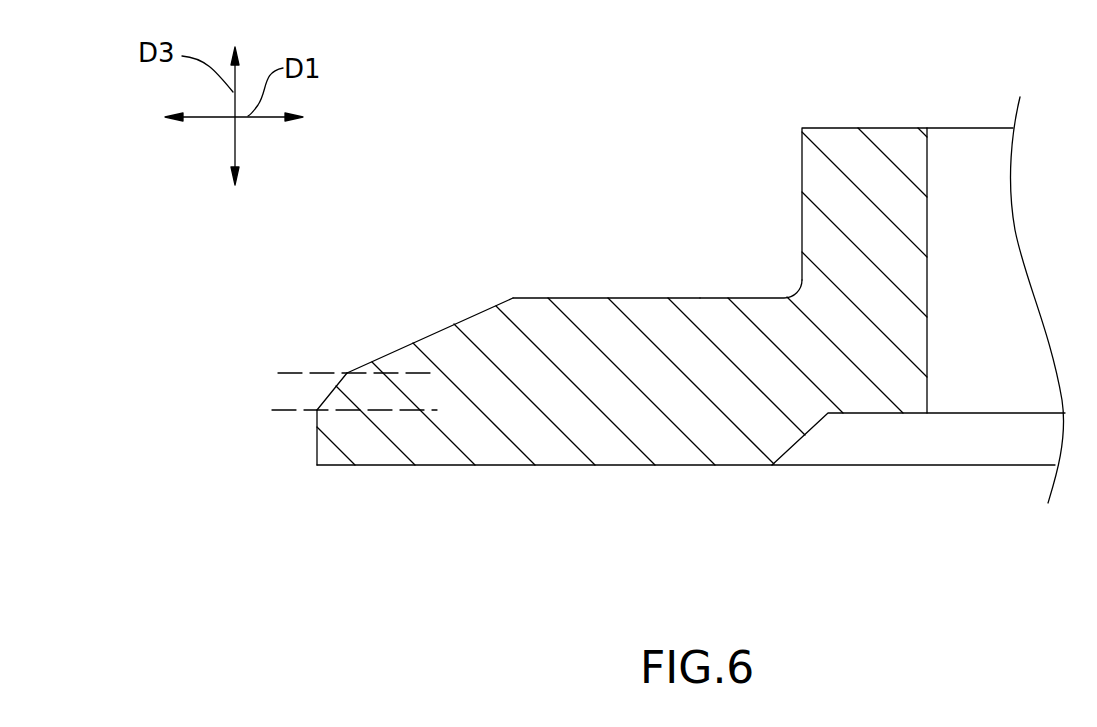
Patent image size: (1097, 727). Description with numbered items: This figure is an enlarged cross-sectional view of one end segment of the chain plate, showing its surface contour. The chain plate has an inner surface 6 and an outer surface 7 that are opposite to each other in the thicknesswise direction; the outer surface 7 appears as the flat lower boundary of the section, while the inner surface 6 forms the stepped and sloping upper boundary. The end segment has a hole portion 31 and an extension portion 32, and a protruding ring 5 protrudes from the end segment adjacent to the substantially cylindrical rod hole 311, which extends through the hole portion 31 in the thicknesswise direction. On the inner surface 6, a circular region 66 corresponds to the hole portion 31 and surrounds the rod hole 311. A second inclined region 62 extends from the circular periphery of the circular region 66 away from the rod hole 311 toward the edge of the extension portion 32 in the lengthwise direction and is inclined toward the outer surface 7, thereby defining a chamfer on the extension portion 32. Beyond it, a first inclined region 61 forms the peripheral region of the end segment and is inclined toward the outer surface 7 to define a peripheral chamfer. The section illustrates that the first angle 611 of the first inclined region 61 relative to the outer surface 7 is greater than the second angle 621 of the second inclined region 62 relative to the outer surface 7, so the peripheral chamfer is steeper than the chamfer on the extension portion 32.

The protruding ring 5 is at (842, 128).
The inner surface 6 is at (752, 296).
The outer surface 7 is at (740, 468).
The hole portion 31 is at (652, 322).
The extension portion 32 is at (448, 333).
The first inclined region 61 is at (347, 374).
The second inclined region 62 is at (397, 355).
The circular region 66 is at (658, 298).
The rod hole 311 is at (964, 180).
The first angle 611 is at (338, 400).
The second angle 621 is at (392, 358).